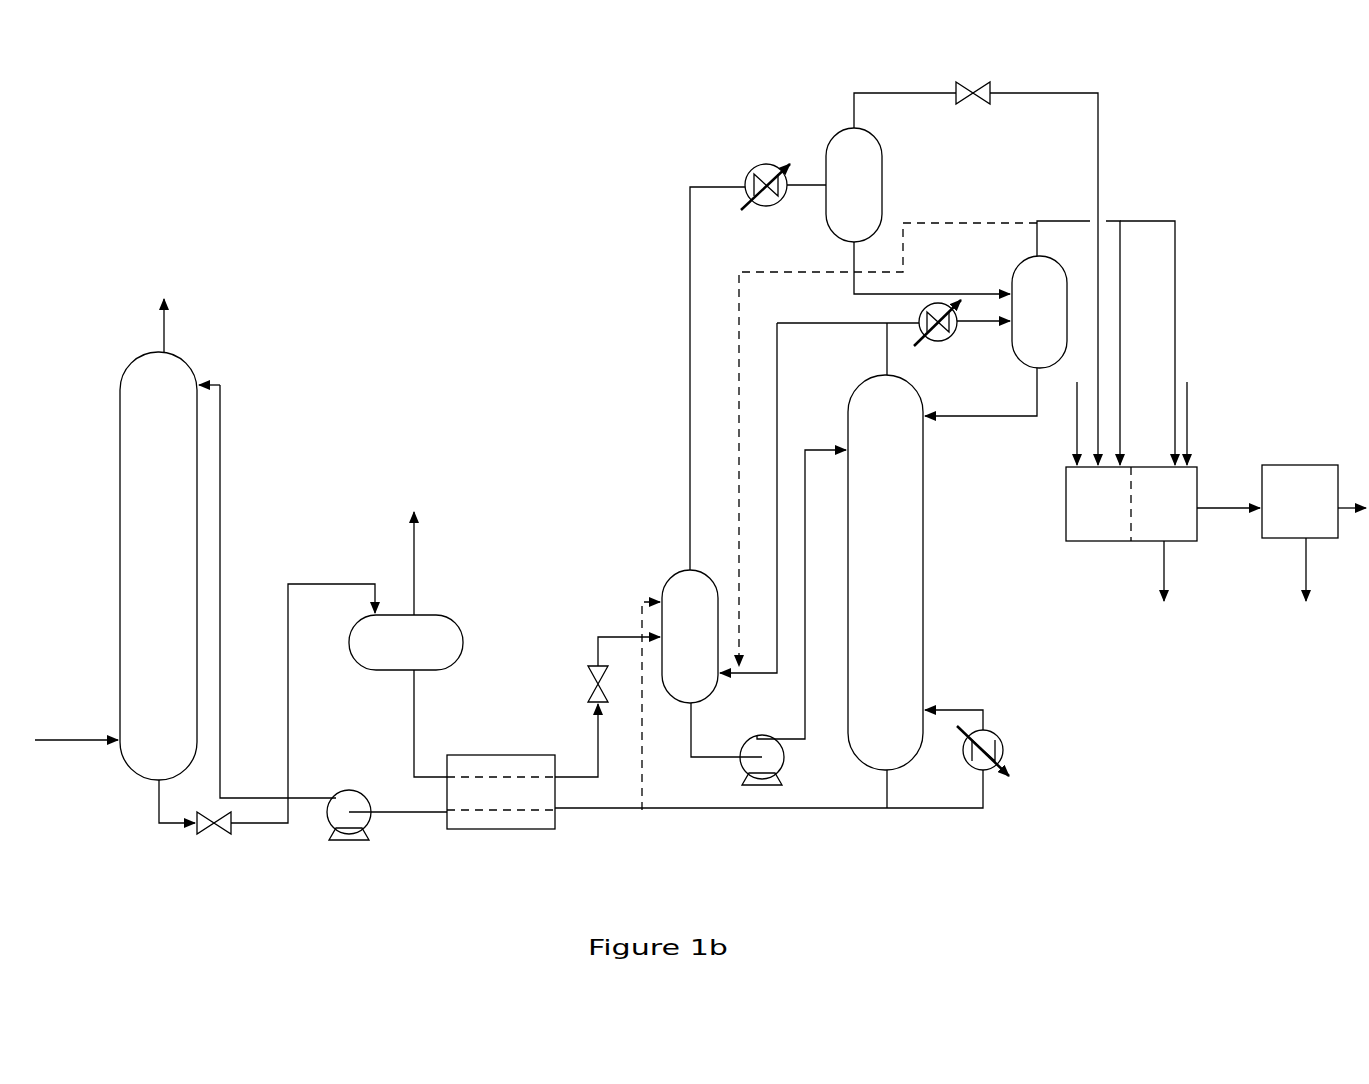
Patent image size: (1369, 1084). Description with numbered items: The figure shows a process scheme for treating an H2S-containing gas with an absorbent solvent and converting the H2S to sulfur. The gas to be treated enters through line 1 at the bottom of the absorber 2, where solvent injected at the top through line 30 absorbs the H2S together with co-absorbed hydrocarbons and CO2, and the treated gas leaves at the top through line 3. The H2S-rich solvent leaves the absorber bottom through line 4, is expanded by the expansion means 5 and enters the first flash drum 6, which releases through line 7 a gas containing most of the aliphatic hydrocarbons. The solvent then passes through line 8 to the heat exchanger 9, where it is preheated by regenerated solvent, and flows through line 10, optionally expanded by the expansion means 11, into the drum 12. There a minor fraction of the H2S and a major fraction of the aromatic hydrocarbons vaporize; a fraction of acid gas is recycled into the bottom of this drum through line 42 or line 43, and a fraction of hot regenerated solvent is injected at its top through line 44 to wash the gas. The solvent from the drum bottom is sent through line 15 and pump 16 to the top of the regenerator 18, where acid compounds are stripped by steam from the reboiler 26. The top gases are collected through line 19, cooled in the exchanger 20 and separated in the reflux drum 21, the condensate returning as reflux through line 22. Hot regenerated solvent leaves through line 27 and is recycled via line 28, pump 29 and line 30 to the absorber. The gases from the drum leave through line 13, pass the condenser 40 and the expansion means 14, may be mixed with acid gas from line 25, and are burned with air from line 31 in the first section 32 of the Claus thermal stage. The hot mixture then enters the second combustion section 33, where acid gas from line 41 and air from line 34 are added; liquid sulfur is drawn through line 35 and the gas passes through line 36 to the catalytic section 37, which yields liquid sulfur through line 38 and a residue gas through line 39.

The line 1 is at (66, 742).
The absorber 2 is at (120, 483).
The overhead vapor stream 3 is at (164, 332).
The line 4 is at (168, 825).
The expansion means 5 is at (222, 834).
The first flash drum 6 is at (460, 627).
The line 7 is at (414, 578).
The line 8 is at (414, 726).
The heat exchanger 9 is at (513, 755).
The line 10 is at (612, 637).
The expansion means 11 is at (588, 684).
The drum 12 is at (674, 570).
The line 13 is at (690, 328).
The expansion means 14 is at (980, 82).
The line 15 is at (722, 739).
The pump 16 is at (780, 766).
The regenerator 18 is at (923, 545).
The line 19 is at (887, 335).
The exchanger 20 is at (940, 341).
The reflux drum 21 is at (1012, 268).
The line 22 is at (990, 416).
The line 25 is at (1120, 318).
The reboiler 26 is at (1003, 745).
The line 27 is at (832, 808).
The line 28 is at (421, 812).
The pump 29 is at (364, 792).
The line 30 is at (220, 472).
The line 31 is at (1077, 435).
The first section 32 is at (1066, 503).
The second combustion section 33 is at (1197, 530).
The line 34 is at (1187, 428).
The line 35 is at (1164, 574).
The line 36 is at (1232, 508).
The catalytic section 37 is at (1296, 465).
The line 38 is at (1306, 574).
The line 39 is at (1352, 508).
The condenser 40 is at (764, 164).
The line 41 is at (1175, 342).
The line 42 is at (777, 388).
The line 43 is at (784, 272).
The line 44 is at (642, 784).